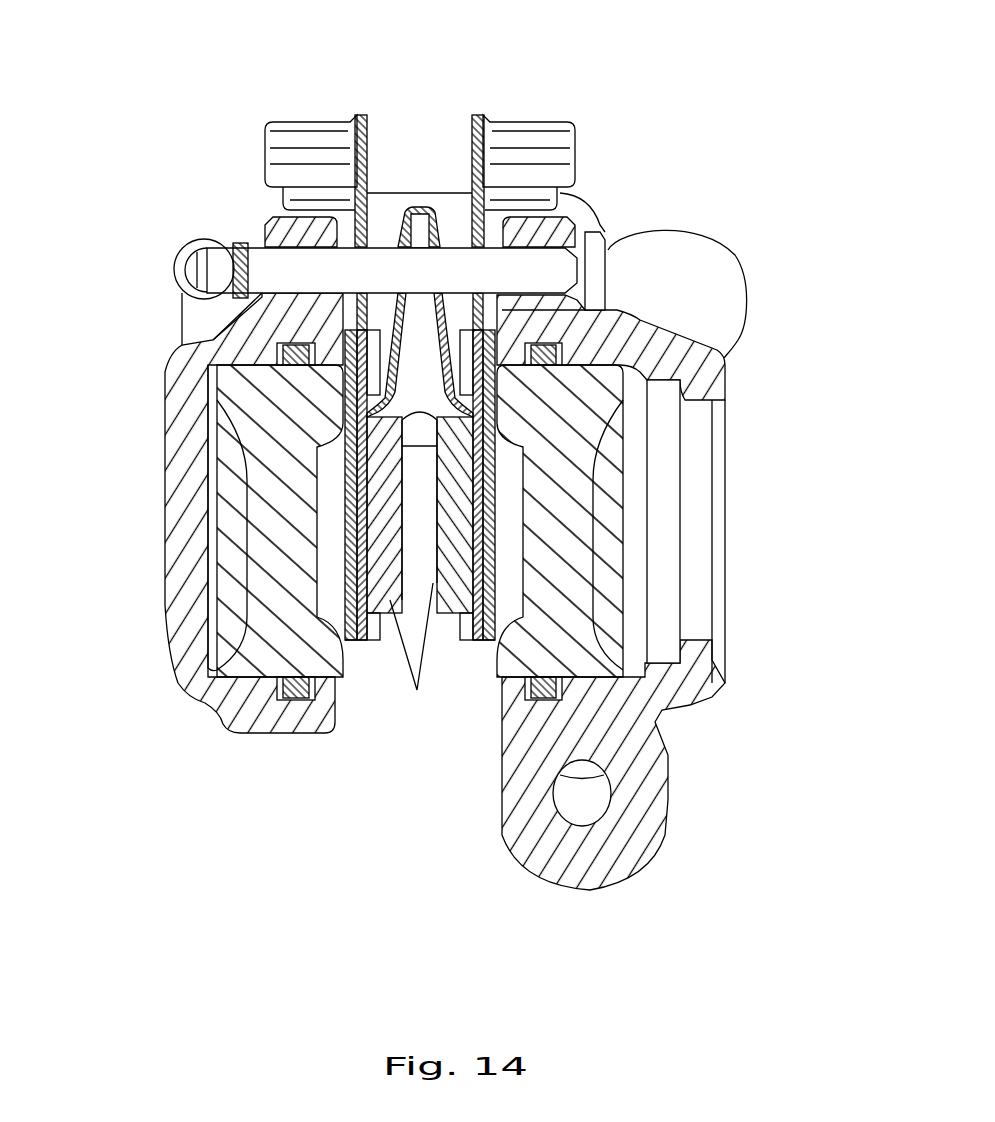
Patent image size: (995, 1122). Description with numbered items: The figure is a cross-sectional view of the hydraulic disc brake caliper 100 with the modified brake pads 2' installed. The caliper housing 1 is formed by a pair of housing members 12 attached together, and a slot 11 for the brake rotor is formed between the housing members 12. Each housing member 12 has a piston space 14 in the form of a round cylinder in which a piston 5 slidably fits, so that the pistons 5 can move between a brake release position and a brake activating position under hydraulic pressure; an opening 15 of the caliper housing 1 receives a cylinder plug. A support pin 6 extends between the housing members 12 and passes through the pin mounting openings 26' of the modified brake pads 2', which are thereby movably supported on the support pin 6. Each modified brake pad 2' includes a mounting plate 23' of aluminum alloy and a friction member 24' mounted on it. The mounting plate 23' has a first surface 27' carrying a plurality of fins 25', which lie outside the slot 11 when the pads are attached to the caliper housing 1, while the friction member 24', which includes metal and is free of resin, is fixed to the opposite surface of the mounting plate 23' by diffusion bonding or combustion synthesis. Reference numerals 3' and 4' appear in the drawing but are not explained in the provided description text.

The disc brake caliper 100 is at (738, 92).
The caliper housing 1 is at (163, 487).
The modified brake pad 2' is at (423, 78).
The outer sleeve 3' is at (445, 485).
The spring arm 4' is at (420, 272).
The piston 5 is at (293, 660).
The support pin 6 is at (260, 262).
The slot 11 is at (418, 747).
The housing member 12 is at (173, 362).
The piston space 14 is at (247, 672).
The opening 15 is at (697, 403).
The mounting plate 23' is at (420, 706).
The friction member 24' is at (417, 651).
The fin 25' is at (422, 181).
The pin mounting opening 26' is at (419, 205).
The first surface 27' is at (450, 485).